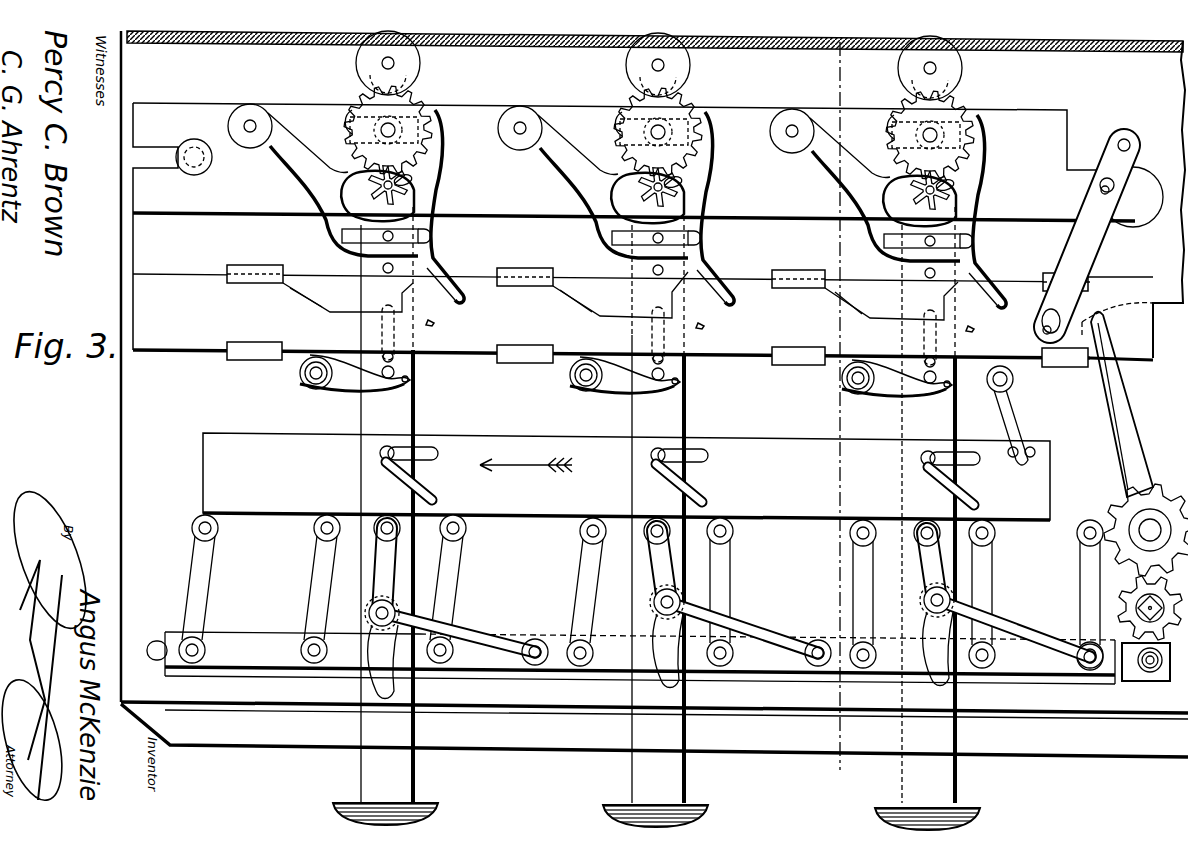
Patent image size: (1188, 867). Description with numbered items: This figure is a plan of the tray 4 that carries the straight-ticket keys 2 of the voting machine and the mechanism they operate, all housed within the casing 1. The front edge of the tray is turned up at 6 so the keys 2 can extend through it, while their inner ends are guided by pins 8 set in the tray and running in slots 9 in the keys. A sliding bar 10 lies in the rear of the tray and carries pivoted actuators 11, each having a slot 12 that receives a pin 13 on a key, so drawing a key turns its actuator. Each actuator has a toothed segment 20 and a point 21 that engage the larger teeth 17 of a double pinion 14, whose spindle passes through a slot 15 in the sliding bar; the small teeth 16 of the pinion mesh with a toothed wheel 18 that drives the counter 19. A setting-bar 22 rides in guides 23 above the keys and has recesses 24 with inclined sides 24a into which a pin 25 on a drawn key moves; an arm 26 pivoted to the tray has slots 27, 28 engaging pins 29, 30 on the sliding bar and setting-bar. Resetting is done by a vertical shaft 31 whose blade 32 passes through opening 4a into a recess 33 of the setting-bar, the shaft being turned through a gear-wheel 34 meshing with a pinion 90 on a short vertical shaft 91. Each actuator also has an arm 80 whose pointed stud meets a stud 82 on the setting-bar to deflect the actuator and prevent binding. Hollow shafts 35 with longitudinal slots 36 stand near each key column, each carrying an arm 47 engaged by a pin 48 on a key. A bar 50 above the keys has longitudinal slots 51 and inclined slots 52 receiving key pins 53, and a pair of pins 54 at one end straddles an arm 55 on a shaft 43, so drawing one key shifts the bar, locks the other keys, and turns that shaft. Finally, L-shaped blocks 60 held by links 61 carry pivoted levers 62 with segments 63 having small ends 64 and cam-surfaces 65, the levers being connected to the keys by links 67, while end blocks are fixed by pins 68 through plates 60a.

The casing 1 is at (655, 37).
The straight-ticket keys 2 is at (656, 518).
The tray 4 is at (684, 411).
The opening 4a is at (1085, 385).
The turned-up front edge 6 is at (654, 729).
The pins 8 is at (394, 359).
The slots 9 is at (397, 312).
The sliding bar 10 is at (205, 166).
The actuators 11 is at (298, 172).
The slots 12 is at (428, 236).
The pins 13 is at (383, 241).
The double pinions 14 is at (368, 195).
The slots 15 is at (345, 192).
The small teeth 16 is at (410, 190).
The larger teeth 17 is at (410, 183).
The toothed wheel 18 is at (412, 112).
The counter 19 is at (356, 63).
The toothed segment 20 is at (442, 140).
The point 21 is at (346, 183).
The setting-bar 22 is at (611, 295).
The guides 23 is at (255, 272).
The recesses 24 is at (620, 296).
The inclined sides 24a is at (579, 312).
The pin 25 is at (383, 270).
The arm 26 is at (1090, 245).
The slot 27 is at (1120, 205).
The slot 28 is at (1042, 318).
The pin 29 is at (1099, 186).
The pin 30 is at (1043, 331).
The shaft 31 is at (1148, 530).
The blade 32 is at (1110, 420).
The recesses 33 is at (1108, 345).
The gear-wheel 34 is at (1118, 510).
The hollow vertical shaft 35 is at (305, 385).
The longitudinal slots 36 is at (586, 388).
The shaft 43 is at (1013, 381).
The arm 47 is at (352, 388).
The pin 48 is at (410, 384).
The bar 50 is at (626, 476).
The longitudinal slots 51 is at (422, 458).
The inclined slots 52 is at (400, 488).
The pin 53 is at (379, 454).
The pins 54 is at (1030, 458).
The arm 55 is at (1014, 420).
The blocks 60 is at (631, 658).
The plates 60a is at (1138, 675).
The links 61 is at (200, 575).
The lever 62 is at (470, 632).
The segment 63 is at (368, 612).
The small end 64 is at (398, 688).
The cam-surface 65 is at (365, 660).
The links 67 is at (377, 562).
The pins 68 is at (1152, 672).
The arm 80 is at (452, 283).
The studs 82 is at (433, 327).
The pinion 90 is at (1135, 598).
The short vertical shaft 91 is at (1136, 609).